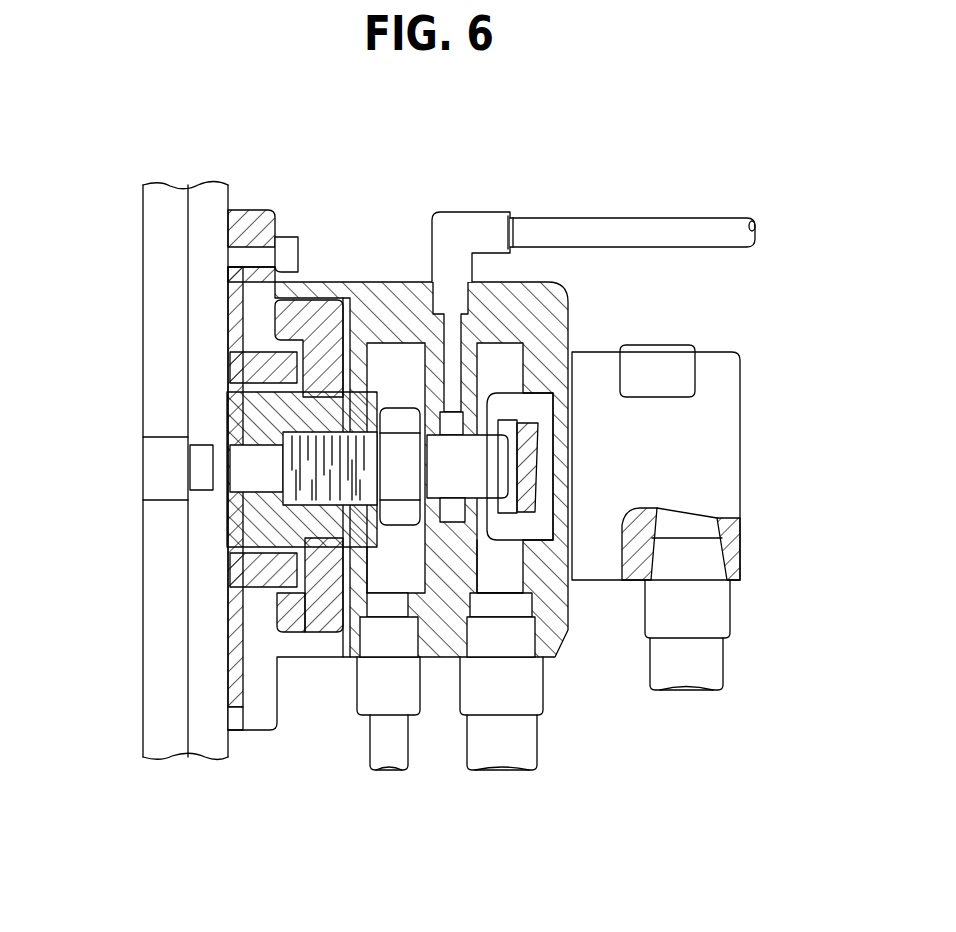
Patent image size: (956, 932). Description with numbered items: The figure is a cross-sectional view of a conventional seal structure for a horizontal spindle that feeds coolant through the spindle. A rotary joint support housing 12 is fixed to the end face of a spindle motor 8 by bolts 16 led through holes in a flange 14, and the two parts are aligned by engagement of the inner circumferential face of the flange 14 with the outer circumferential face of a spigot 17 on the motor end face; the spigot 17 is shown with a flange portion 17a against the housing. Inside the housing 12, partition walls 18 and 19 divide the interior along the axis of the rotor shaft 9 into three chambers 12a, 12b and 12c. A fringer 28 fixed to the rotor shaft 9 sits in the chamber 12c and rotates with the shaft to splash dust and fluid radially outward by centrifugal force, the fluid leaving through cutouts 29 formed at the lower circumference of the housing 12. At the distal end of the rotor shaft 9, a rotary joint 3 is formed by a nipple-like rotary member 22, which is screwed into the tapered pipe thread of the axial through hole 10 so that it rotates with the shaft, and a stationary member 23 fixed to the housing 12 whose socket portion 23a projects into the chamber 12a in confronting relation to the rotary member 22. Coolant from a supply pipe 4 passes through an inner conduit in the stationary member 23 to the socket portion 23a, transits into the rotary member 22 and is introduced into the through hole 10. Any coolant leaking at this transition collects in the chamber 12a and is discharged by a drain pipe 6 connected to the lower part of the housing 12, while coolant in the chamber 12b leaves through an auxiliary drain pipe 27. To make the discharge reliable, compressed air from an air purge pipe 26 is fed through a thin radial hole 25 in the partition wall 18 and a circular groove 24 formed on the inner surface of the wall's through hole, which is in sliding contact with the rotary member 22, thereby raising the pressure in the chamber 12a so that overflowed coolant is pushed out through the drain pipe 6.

The rotary joint 3 is at (720, 525).
The pipe 4 is at (700, 660).
The drain pipe 6 is at (520, 748).
The spindle motor 8 is at (170, 782).
The rotor shaft 9 is at (230, 520).
The through hole 10 is at (245, 465).
The rotary joint support housing 12 is at (470, 382).
The chamber 12a is at (527, 347).
The chamber 12b is at (446, 295).
The chamber 12c is at (379, 278).
The flange 14 is at (262, 232).
The bolts 16 is at (290, 242).
The spigot 17 is at (232, 318).
The clamp flange 17a is at (232, 640).
The partition wall 18 is at (480, 557).
The partition wall 19 is at (388, 600).
The rotary member 22 is at (462, 522).
The stationary member 23 is at (712, 440).
The socket portion 23a is at (517, 527).
The circular groove 24 is at (448, 423).
The thin hole 25 is at (540, 292).
The air purge pipe 26 is at (512, 230).
The auxiliary drain pipe 27 is at (383, 748).
The fringer 28 is at (318, 330).
The cutouts 29 is at (262, 712).